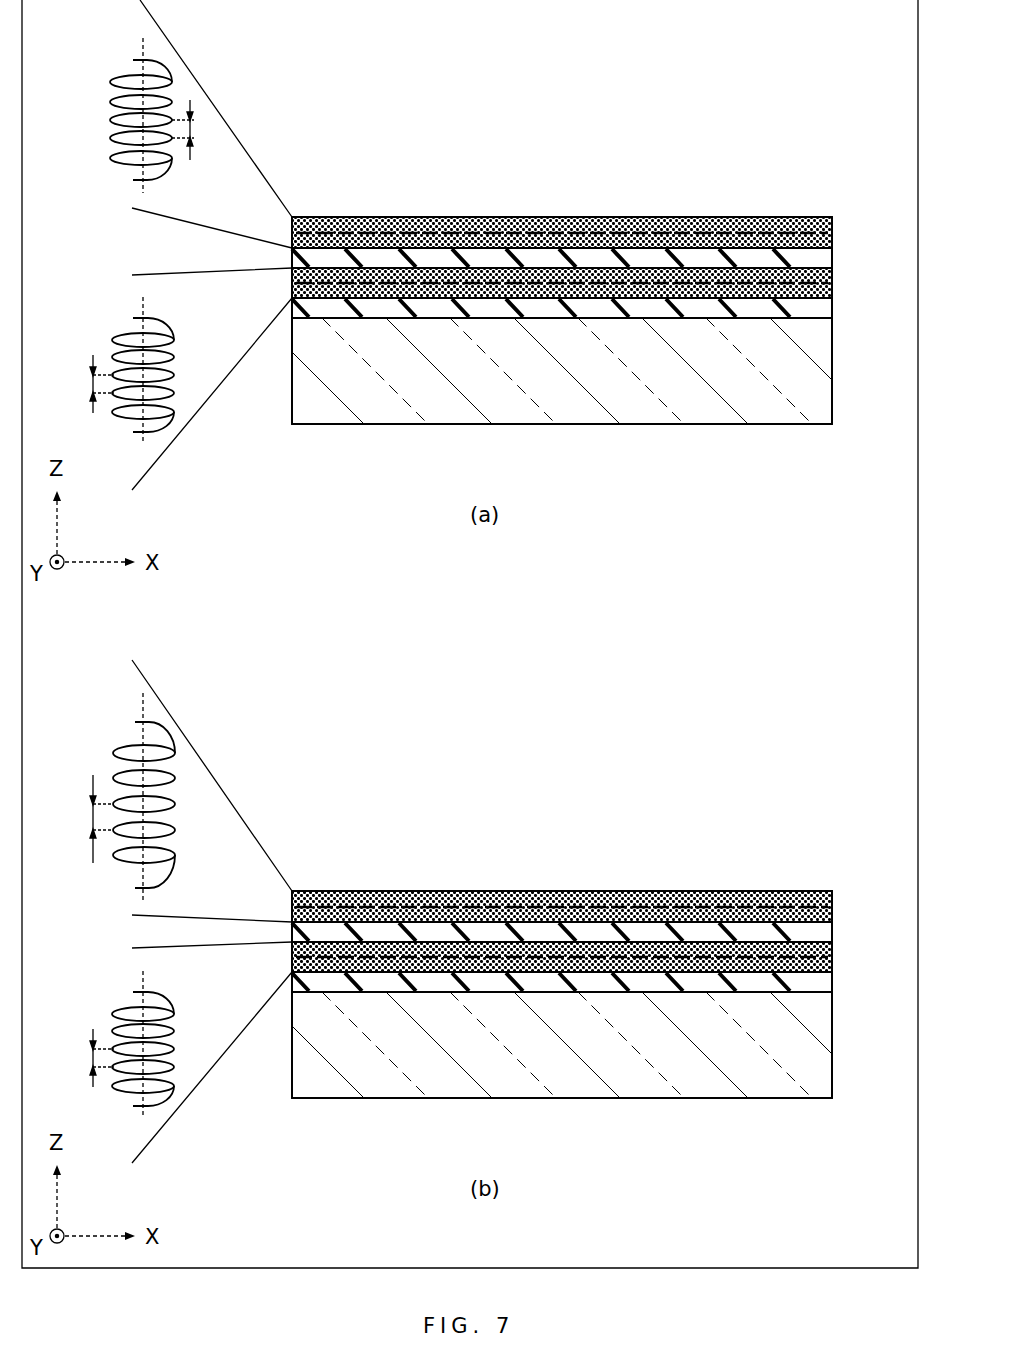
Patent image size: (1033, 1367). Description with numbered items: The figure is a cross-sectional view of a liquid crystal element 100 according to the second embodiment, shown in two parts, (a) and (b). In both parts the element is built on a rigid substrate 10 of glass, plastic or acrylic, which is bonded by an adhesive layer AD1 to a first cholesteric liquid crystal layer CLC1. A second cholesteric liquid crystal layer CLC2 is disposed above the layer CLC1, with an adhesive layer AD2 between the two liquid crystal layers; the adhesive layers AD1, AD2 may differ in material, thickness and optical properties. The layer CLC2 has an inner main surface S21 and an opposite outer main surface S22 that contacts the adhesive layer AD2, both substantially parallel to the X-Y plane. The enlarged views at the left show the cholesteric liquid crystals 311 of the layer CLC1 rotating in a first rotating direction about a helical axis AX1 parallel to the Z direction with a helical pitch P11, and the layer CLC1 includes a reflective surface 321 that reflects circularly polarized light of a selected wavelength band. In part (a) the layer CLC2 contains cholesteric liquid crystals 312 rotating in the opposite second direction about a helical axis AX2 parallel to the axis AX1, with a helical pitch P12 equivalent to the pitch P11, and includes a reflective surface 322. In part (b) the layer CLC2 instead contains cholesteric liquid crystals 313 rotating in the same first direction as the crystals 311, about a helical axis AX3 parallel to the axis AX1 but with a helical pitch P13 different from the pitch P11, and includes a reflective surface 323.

The liquid crystal element 100 is at (819, 112).
The rigid substrate 10 is at (832, 359).
The first cholesteric liquid crystal layer CLC1 is at (832, 282).
The second cholesteric liquid crystal layer CLC2 is at (832, 229).
The adhesive layer AD1 is at (832, 307).
The adhesive layer AD2 is at (832, 257).
The cholesteric liquid crystals 311 is at (167, 330).
The cholesteric liquid crystals 312 is at (110, 70).
The cholesteric liquid crystals 313 is at (175, 771).
The reflective surface 321 is at (640, 283).
The reflective surface 322 is at (720, 233).
The reflective surface 323 is at (720, 907).
The helical axis AX1 is at (143, 310).
The helical axis AX2 is at (143, 43).
The helical axis AX3 is at (143, 712).
The helical pitch P11 is at (93, 385).
The helical pitch P12 is at (197, 133).
The helical pitch P13 is at (93, 820).
The main surface S21 is at (535, 217).
The main surface S22 is at (538, 248).